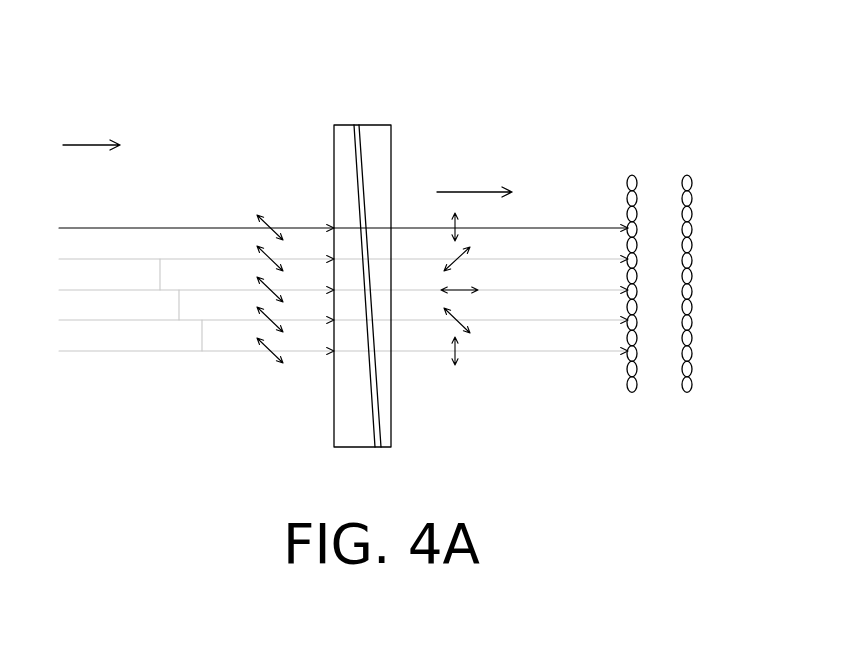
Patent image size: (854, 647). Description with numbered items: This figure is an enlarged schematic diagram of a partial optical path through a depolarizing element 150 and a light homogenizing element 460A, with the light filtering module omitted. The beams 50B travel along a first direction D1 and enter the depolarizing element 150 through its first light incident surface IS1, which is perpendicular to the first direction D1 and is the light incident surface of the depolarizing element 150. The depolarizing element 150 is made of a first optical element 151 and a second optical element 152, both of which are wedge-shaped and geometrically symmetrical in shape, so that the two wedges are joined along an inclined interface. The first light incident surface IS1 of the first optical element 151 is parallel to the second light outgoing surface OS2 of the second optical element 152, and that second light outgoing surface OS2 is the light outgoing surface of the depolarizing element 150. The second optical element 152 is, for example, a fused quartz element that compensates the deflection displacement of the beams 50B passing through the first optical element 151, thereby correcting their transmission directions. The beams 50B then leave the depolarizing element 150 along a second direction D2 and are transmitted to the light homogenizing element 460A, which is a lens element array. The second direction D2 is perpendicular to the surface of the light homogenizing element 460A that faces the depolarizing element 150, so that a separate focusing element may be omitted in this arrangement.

The depolarizing element 150 is at (359, 228).
The first optical element 151 is at (343, 137).
The second optical element 152 is at (372, 137).
The beams 50B is at (202, 320).
The light homogenizing element 460A is at (687, 172).
The first light incident surface IS1 is at (322, 148).
The second light outgoing surface OS2 is at (403, 148).
The first direction D1 is at (91, 128).
The second direction D2 is at (474, 176).